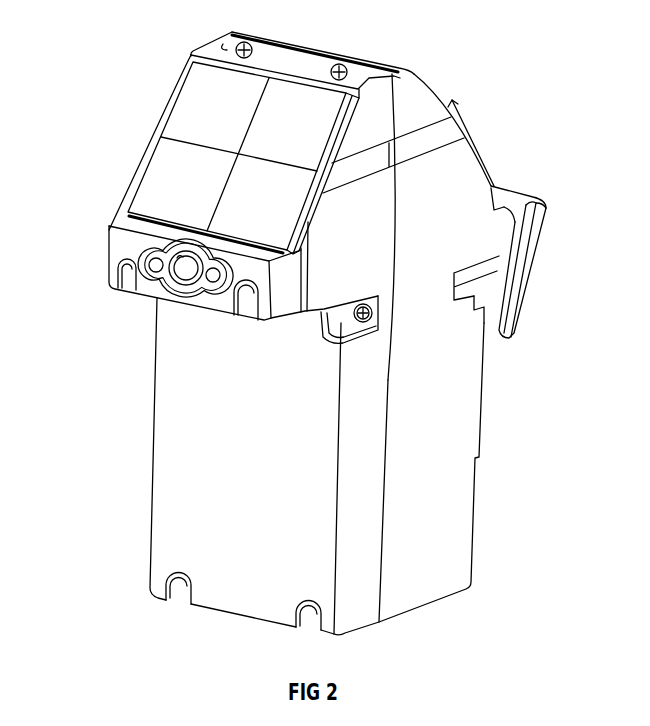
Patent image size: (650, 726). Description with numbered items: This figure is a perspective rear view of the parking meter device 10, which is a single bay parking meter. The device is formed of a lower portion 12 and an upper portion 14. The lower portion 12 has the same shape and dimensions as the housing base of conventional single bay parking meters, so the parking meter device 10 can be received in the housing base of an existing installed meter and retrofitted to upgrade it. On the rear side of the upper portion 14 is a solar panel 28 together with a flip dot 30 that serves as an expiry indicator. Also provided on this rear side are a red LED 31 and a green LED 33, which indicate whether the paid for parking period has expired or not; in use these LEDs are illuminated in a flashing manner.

The parking meter device 10 is at (479, 66).
The lower portion 12 is at (119, 464).
The upper portion 14 is at (79, 252).
The solar panel 28 is at (190, 107).
The flip dot 30 is at (186, 274).
The red LED 31 is at (155, 271).
The green LED 33 is at (212, 282).